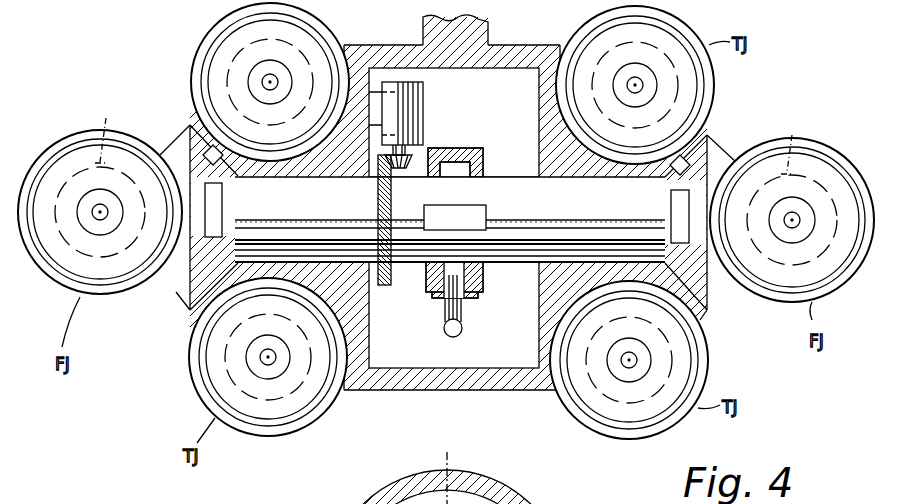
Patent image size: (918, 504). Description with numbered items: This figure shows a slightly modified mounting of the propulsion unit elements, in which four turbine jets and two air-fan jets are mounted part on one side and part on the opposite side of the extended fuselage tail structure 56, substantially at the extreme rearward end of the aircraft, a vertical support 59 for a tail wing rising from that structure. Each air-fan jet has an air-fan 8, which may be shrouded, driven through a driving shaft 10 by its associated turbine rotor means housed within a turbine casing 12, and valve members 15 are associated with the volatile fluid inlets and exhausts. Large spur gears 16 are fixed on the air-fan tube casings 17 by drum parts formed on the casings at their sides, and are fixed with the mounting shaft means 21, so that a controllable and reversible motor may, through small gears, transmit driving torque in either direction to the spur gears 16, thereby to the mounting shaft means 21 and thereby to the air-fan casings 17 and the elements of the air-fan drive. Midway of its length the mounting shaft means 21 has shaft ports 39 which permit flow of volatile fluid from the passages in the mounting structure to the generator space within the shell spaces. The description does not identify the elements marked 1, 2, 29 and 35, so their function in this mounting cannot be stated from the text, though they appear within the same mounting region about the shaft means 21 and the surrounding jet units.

The pipe 1 is at (458, 462).
The roller wheel 2 is at (320, 38).
The air-fan 8 is at (58, 262).
The driving shaft 10 is at (100, 218).
The turbine casing 12 is at (450, 136).
The valve member 15 is at (187, 276).
The large spur gear 16 is at (378, 200).
The air-fan tube casing 17 is at (40, 163).
The mounting shaft means 21 is at (536, 213).
The ball plunger 29 is at (462, 330).
The slot 35 is at (214, 200).
The shaft port 39 is at (444, 213).
The fuselage tail structure 56 is at (506, 52).
The vertical support 59 is at (423, 33).